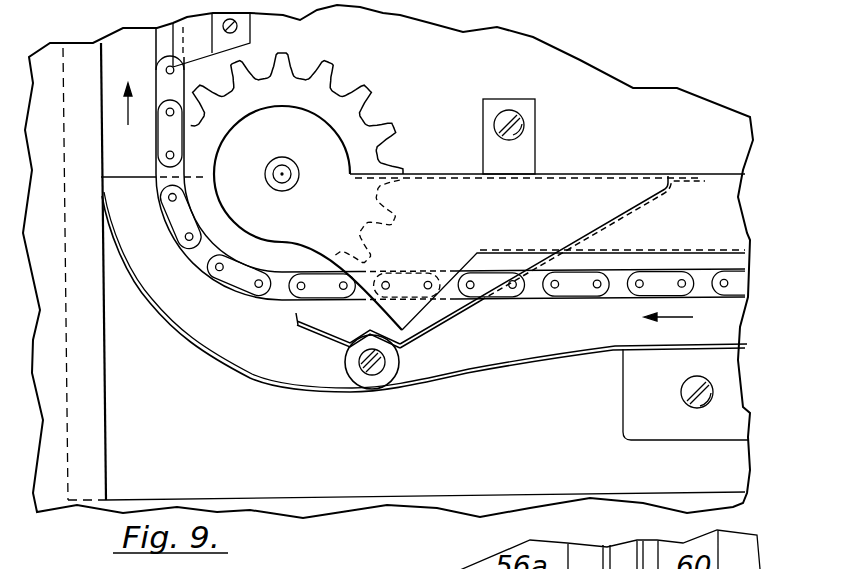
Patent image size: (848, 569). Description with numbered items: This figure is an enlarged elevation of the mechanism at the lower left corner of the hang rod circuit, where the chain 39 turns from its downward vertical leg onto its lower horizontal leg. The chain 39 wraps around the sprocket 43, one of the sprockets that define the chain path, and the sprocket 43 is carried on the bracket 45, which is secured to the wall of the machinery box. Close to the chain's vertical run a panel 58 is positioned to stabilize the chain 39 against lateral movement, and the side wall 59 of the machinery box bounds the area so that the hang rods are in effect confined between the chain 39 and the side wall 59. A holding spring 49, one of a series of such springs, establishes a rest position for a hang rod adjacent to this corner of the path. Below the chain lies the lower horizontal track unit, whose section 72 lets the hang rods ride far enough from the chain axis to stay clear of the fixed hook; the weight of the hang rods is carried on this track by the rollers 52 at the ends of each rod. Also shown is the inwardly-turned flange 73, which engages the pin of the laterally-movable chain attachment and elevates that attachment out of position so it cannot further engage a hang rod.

The chain 39 is at (583, 299).
The sprocket 43 is at (321, 90).
The bracket 45 is at (332, 143).
The holding spring 49 is at (318, 337).
The roller 52 is at (370, 378).
The panel 58 is at (252, 33).
The side wall 59 is at (107, 438).
The track section 72 is at (473, 378).
The inwardly-turned flange 73 is at (427, 306).